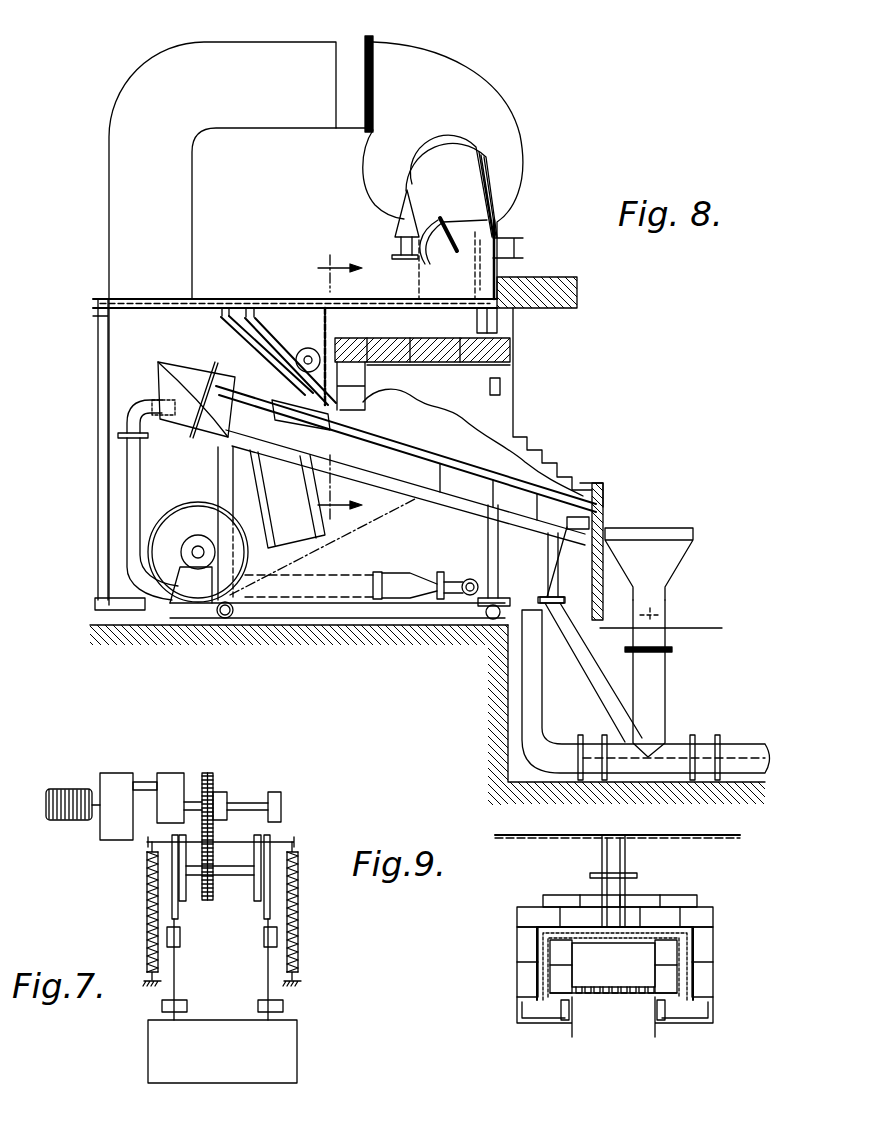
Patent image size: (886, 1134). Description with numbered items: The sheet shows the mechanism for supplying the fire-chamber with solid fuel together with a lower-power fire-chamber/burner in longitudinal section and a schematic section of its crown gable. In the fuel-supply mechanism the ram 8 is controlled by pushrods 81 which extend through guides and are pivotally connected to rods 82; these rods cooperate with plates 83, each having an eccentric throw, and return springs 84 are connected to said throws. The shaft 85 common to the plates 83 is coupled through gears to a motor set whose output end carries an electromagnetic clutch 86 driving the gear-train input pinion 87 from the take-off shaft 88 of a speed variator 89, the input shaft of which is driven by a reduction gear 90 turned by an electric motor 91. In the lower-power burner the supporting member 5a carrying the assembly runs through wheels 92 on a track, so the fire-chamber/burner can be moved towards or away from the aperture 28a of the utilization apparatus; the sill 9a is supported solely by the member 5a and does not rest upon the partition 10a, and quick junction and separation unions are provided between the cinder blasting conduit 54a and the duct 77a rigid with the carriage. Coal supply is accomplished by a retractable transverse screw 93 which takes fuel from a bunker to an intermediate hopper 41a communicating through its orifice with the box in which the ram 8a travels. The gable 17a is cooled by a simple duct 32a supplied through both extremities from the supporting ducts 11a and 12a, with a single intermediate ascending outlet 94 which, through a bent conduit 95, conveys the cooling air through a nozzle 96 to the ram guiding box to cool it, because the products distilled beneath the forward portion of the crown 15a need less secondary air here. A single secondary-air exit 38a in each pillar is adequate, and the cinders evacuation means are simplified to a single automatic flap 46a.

In FIG. 8, the bent conduit 95 is at (305, 372).
In FIG. 8, the intermediate hopper 41a is at (273, 313).
In FIG. 8, the gable 17a is at (372, 320).
In FIG. 8, the transverse screw 93 is at (306, 348).
In FIG. 8, the nozzle 96 is at (267, 362).
In FIG. 8, the ram 8a is at (343, 423).
In FIG. 8, the aperture 28a is at (510, 332).
In FIG. 8, the crown 15a is at (493, 348).
In FIG. 8, the secondary-air exit 38a is at (500, 387).
In FIG. 8, the sill 9a is at (600, 497).
In FIG. 8, the partition 10a is at (605, 527).
In FIG. 8, the automatic flap 46a is at (652, 620).
In FIG. 8, the cinder blasting conduit 54a is at (537, 704).
In FIG. 8, the supporting member 5a is at (490, 560).
In FIG. 8, the duct 77a is at (393, 598).
In FIG. 8, the wheels 92 is at (228, 623).
In FIG. 7, the electric motor 91 is at (66, 788).
In FIG. 7, the reduction gear 90 is at (112, 780).
In FIG. 7, the speed variator 89 is at (168, 780).
In FIG. 7, the take-off shaft 88 is at (205, 800).
In FIG. 7, the gear-train input pinion 87 is at (225, 790).
In FIG. 7, the electromagnetic clutch 86 is at (232, 800).
In FIG. 7, the shaft 85 is at (233, 875).
In FIG. 7, the return springs 84 is at (147, 890).
In FIG. 7, the plates 83 is at (185, 890).
In FIG. 7, the rods 82 is at (180, 930).
In FIG. 7, the pushrods 81 is at (178, 982).
In FIG. 7, the ram 8 is at (158, 1053).
In FIG. 9, the intermediate ascending outlet 94 is at (613, 884).
In FIG. 9, the duct 32a is at (657, 933).
In FIG. 9, the supporting duct 12a is at (540, 1013).
In FIG. 9, the supporting duct 11a is at (690, 1013).